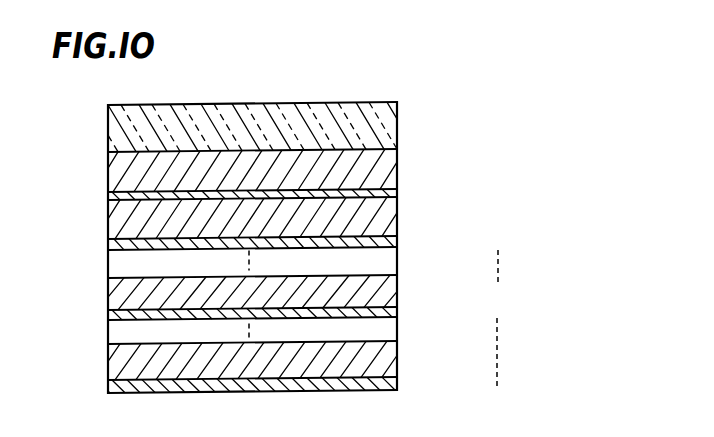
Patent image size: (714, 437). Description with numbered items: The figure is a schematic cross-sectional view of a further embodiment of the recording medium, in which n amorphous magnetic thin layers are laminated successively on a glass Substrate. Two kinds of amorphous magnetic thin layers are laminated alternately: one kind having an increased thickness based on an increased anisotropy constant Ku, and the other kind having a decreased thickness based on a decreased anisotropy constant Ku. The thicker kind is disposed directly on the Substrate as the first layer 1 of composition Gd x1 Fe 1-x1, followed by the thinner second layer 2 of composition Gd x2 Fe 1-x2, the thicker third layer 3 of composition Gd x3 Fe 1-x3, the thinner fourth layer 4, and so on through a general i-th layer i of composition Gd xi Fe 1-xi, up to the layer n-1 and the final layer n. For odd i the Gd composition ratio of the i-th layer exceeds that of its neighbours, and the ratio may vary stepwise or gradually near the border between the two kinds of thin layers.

The substrate Substrate is at (382, 124).
The first magnetic thin layer 1 is at (383, 168).
The second magnetic thin layer 2 is at (384, 196).
The third magnetic thin layer 3 is at (383, 221).
The fourth magnetic thin layer 4 is at (384, 241).
The i-th magnetic thin layer i is at (384, 293).
The (n-1)-th magnetic thin layer n-1 is at (385, 360).
The n-th magnetic thin layer n is at (385, 386).